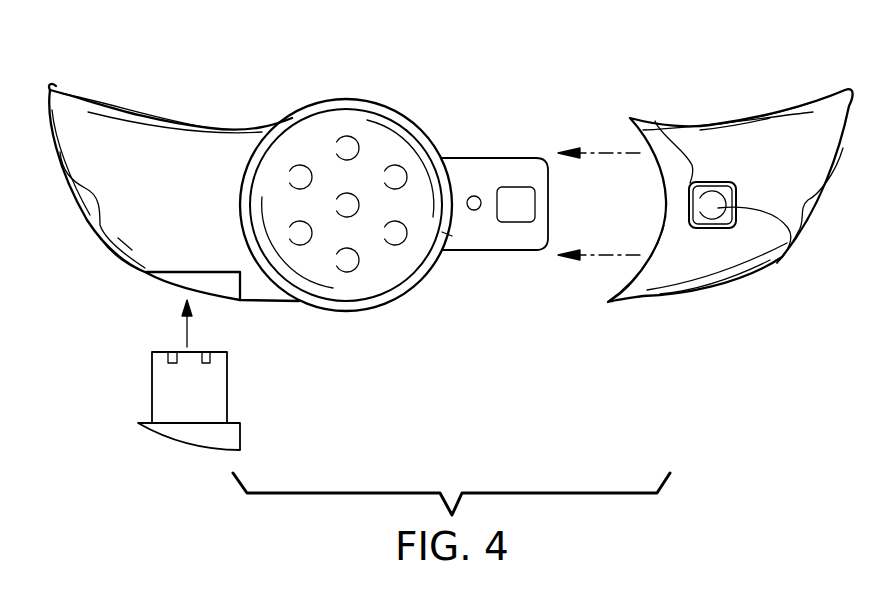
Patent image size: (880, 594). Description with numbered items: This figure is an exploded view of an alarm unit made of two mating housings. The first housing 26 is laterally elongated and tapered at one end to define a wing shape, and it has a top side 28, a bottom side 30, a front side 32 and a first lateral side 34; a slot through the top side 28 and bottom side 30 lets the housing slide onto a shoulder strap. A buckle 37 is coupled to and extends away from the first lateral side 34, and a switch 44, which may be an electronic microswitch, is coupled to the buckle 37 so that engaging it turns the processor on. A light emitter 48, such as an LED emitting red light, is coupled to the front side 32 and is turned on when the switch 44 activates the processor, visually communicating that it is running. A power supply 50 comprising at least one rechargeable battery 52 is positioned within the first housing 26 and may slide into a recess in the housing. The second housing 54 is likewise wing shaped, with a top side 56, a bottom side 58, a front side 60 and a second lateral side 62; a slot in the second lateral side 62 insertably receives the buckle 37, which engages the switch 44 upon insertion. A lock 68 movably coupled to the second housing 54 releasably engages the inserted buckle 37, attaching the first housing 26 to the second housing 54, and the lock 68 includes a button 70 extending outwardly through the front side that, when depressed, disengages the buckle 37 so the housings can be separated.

The first housing 26 is at (220, 123).
The top side 28 is at (103, 108).
The bottom side 30 is at (112, 257).
The front side 32 is at (90, 154).
The first lateral side 34 is at (450, 233).
The buckle 37 is at (537, 158).
The switch 44 is at (474, 196).
The light emitter 48 is at (363, 133).
The power supply 50 is at (152, 388).
The rechargeable battery 52 is at (227, 388).
The second housing 54 is at (830, 90).
The top side 56 is at (780, 110).
The bottom side 58 is at (715, 290).
The front side 60 is at (725, 143).
The second lateral side 62 is at (628, 286).
The lock 68 is at (662, 128).
The button 70 is at (777, 264).